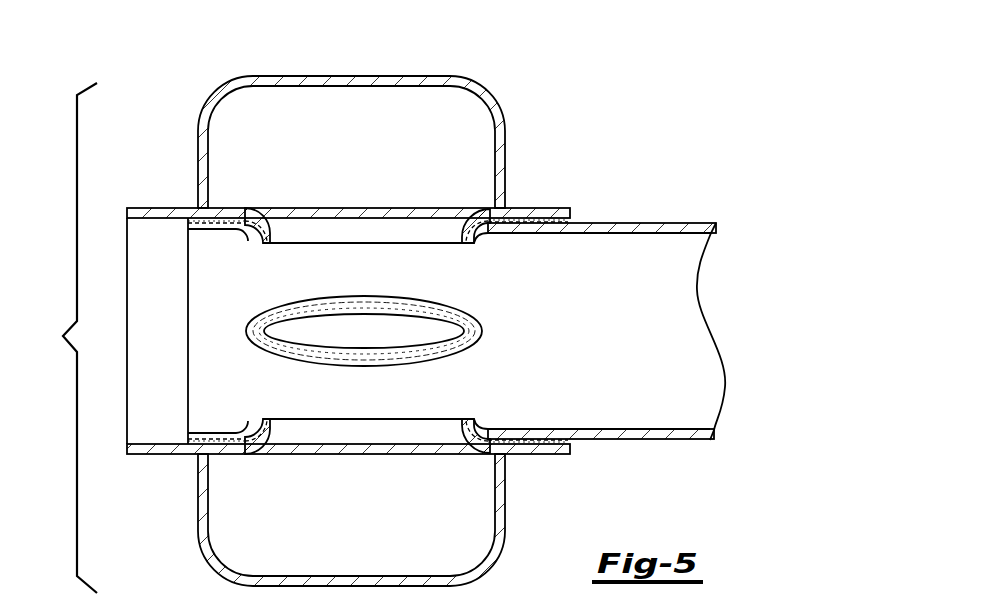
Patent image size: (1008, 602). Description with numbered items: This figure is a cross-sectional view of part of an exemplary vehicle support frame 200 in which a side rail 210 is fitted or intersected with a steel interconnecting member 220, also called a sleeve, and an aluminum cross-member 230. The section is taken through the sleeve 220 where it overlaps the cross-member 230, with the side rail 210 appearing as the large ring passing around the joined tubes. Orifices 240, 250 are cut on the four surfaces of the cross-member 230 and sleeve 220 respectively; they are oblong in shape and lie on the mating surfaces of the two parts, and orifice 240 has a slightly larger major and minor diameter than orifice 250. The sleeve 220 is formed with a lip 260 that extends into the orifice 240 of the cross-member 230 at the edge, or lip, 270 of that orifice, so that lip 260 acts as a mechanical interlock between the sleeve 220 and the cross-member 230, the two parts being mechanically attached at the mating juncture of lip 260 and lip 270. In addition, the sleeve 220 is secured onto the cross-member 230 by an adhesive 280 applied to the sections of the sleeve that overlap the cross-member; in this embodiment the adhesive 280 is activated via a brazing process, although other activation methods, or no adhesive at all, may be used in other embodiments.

The vehicle support frame 200 is at (58, 338).
The side rail 210 is at (352, 76).
The interconnecting member 220 is at (541, 208).
The cross-member 230 is at (697, 223).
The orifice 240 is at (263, 256).
The orifice 250 is at (468, 256).
The lip 260 is at (262, 213).
The edge 270 is at (246, 239).
The adhesive 280 is at (185, 218).